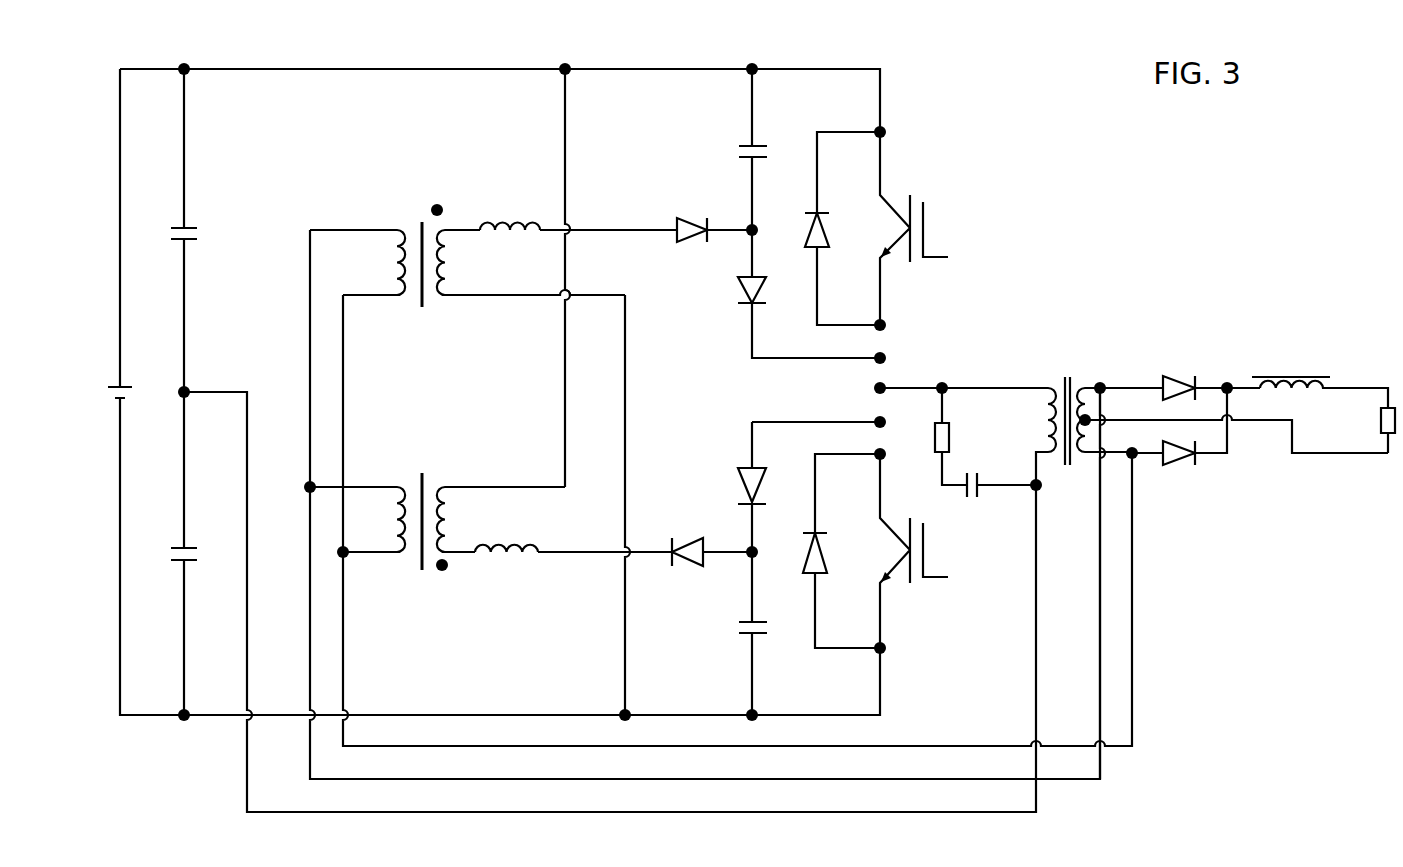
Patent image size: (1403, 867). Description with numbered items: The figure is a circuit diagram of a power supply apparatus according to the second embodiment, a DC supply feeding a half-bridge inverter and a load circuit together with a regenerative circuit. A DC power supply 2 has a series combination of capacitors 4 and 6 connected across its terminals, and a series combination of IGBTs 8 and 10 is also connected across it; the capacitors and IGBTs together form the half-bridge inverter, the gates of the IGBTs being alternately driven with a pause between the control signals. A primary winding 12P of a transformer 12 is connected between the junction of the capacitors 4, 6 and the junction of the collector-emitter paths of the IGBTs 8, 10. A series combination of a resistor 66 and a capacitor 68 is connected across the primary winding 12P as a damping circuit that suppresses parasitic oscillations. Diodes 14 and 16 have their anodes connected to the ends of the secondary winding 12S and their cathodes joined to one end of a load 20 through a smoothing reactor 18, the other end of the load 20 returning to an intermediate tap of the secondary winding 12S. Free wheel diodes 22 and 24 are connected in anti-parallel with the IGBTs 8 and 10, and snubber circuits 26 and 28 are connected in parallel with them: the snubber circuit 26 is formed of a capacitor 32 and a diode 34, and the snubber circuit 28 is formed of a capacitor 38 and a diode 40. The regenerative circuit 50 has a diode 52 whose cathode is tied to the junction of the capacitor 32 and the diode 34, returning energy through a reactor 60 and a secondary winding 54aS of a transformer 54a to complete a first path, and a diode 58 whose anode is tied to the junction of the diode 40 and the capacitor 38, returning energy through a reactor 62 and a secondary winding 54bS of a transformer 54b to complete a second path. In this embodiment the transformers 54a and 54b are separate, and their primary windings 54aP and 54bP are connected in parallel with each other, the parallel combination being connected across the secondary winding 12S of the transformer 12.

The DC power supply 2 is at (118, 387).
The capacitor 4 is at (186, 230).
The capacitor 6 is at (185, 548).
The IGBT 8 is at (908, 228).
The IGBT 10 is at (905, 551).
The transformer 12 is at (1193, 431).
The primary winding 12P is at (1048, 400).
The secondary winding 12S is at (1086, 460).
The diode 14 is at (1170, 380).
The diode 16 is at (1172, 462).
The smoothing reactor 18 is at (1283, 377).
The load 20 is at (1381, 420).
The free wheel diode 22 is at (812, 230).
The free wheel diode 24 is at (811, 555).
The snubber circuit 26 is at (601, 193).
The snubber circuit 28 is at (573, 528).
The capacitor 32 is at (745, 150).
The diode 34 is at (746, 285).
The capacitor 38 is at (742, 630).
The diode 40 is at (750, 468).
The regenerative circuit 50 is at (493, 408).
The diode 52 is at (692, 242).
The transformer 54a is at (467, 274).
The primary winding 54aP is at (396, 297).
The secondary winding 54aS is at (440, 297).
The transformer 54b is at (437, 525).
The primary winding 54bP is at (396, 553).
The secondary winding 54bS is at (445, 488).
The diode 58 is at (690, 562).
The reactor 60 is at (497, 224).
The reactor 62 is at (497, 555).
The resistor 66 is at (950, 436).
The capacitor 68 is at (970, 502).